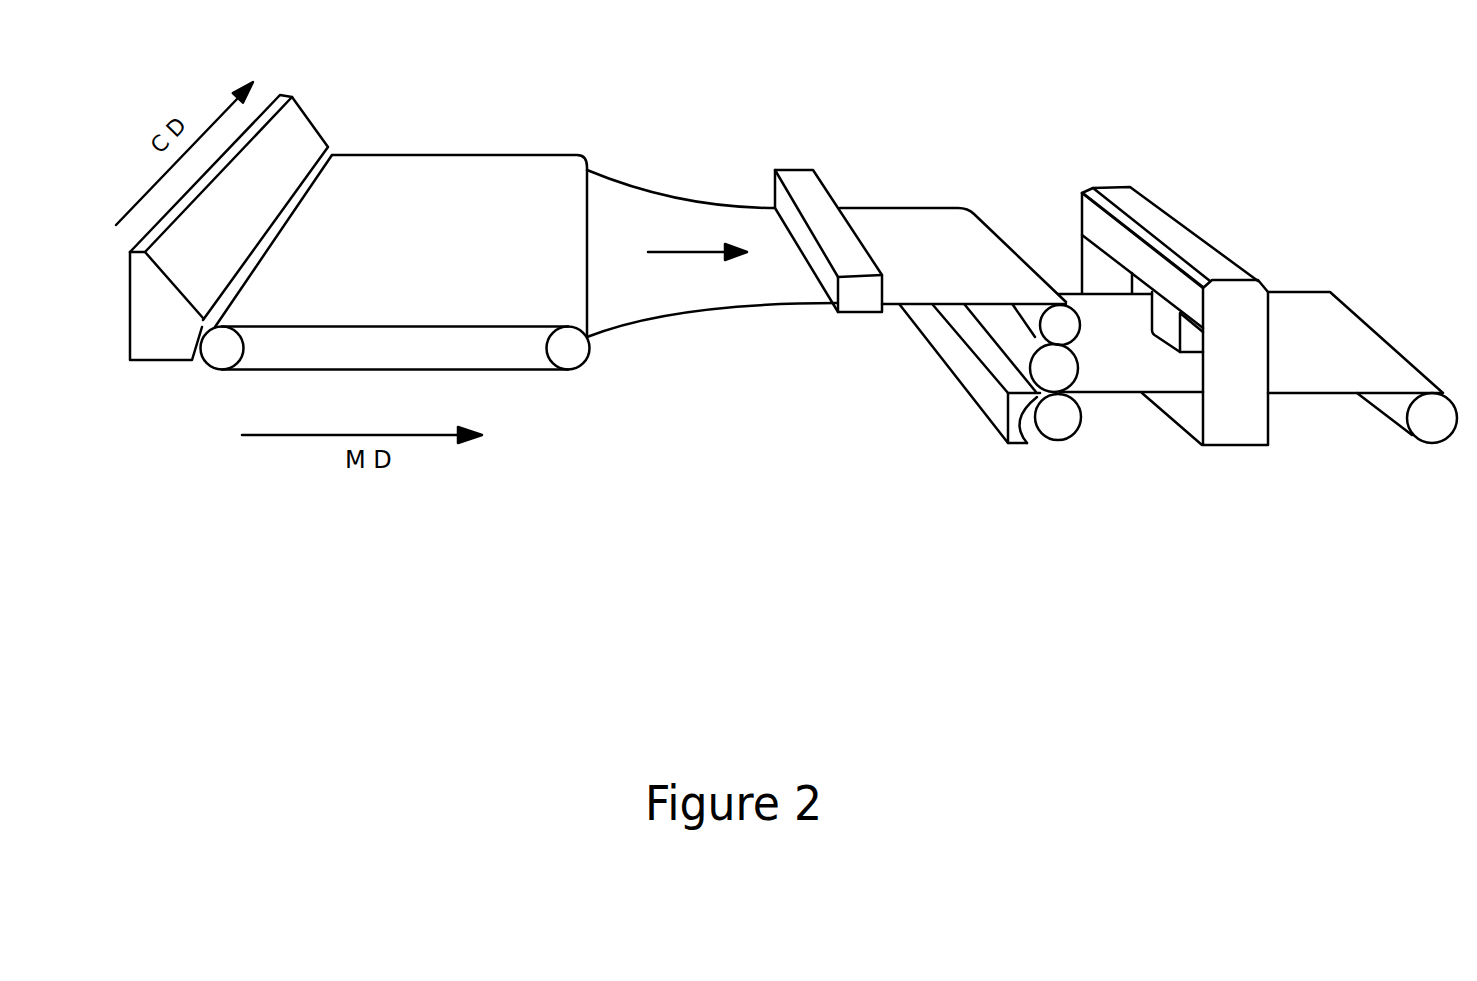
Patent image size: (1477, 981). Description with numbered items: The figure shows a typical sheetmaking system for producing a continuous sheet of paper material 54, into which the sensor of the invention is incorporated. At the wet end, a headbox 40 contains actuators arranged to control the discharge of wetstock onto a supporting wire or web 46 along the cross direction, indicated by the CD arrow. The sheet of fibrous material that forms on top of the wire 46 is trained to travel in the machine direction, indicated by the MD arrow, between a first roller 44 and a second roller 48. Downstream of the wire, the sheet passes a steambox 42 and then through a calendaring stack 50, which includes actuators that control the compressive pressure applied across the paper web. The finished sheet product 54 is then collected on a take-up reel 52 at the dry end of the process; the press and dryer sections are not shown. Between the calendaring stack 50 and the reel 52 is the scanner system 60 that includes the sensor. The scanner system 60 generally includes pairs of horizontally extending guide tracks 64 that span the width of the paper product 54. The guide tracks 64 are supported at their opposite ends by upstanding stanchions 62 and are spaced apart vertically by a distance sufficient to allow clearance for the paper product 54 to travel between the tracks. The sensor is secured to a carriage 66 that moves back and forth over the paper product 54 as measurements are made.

The headbox 40 is at (143, 362).
The steambox 42 is at (802, 170).
The roller 44 is at (217, 370).
The supporting wire or web 46 is at (367, 372).
The roller 48 is at (583, 363).
The calendaring stack 50 is at (1058, 438).
The take-up reel 52 is at (1435, 447).
The sheet of paper material 54 is at (1337, 320).
The scanner system 60 is at (1203, 247).
The stanchion 62 is at (1220, 448).
The guide track 64 is at (1107, 232).
The carriage 66 is at (1172, 323).